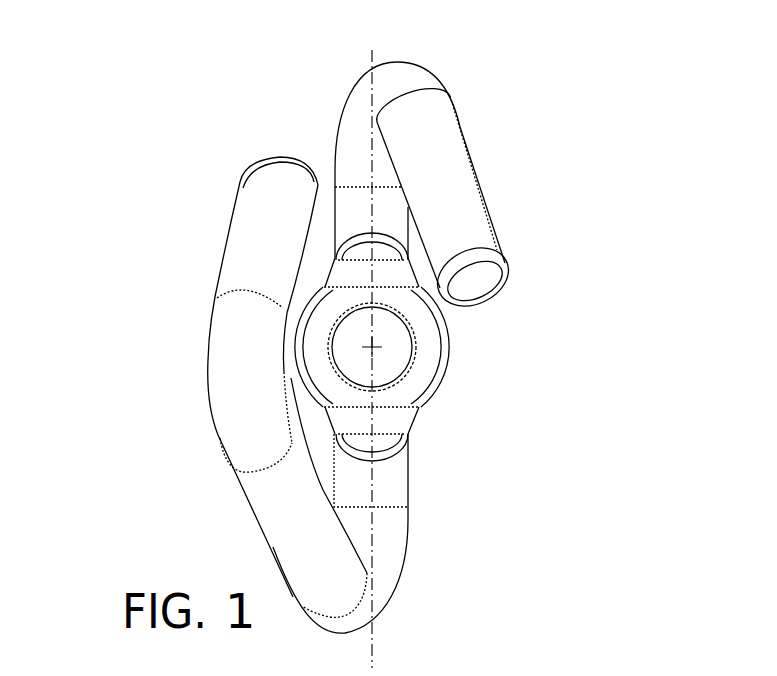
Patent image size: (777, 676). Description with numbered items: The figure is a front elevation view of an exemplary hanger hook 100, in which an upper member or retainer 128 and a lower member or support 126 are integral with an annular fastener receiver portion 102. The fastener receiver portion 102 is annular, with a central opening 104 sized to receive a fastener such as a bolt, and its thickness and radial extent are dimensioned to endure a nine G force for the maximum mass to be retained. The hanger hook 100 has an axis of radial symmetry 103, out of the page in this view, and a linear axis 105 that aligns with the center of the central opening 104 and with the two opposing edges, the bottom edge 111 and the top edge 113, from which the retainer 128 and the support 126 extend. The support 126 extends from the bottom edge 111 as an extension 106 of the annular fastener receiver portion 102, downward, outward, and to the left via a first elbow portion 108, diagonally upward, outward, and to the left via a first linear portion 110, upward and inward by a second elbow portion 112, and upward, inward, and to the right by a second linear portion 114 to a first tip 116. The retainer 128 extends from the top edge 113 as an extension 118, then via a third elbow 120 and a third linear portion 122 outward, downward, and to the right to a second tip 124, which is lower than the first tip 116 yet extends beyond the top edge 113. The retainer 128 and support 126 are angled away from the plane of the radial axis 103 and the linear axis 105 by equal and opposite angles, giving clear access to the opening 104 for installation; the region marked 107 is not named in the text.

The hanger hook 100 is at (186, 68).
The annular fastener receiver portion 102 is at (433, 343).
The axis of radial symmetry 103 is at (374, 348).
The central opening 104 is at (384, 371).
The linear axis 105 is at (371, 60).
The extension 106 is at (392, 484).
The shoulder 107 is at (445, 424).
The first elbow portion 108 is at (388, 550).
The first linear portion 110 is at (280, 520).
The bottom edge 111 is at (328, 408).
The second elbow portion 112 is at (218, 368).
The top edge 113 is at (327, 287).
The second linear portion 114 is at (243, 218).
The first tip 116 is at (280, 157).
The extension 118 is at (352, 212).
The third elbow 120 is at (397, 76).
The third linear portion 122 is at (462, 184).
The second tip 124 is at (483, 288).
The support 126 is at (178, 442).
The retainer 128 is at (505, 140).